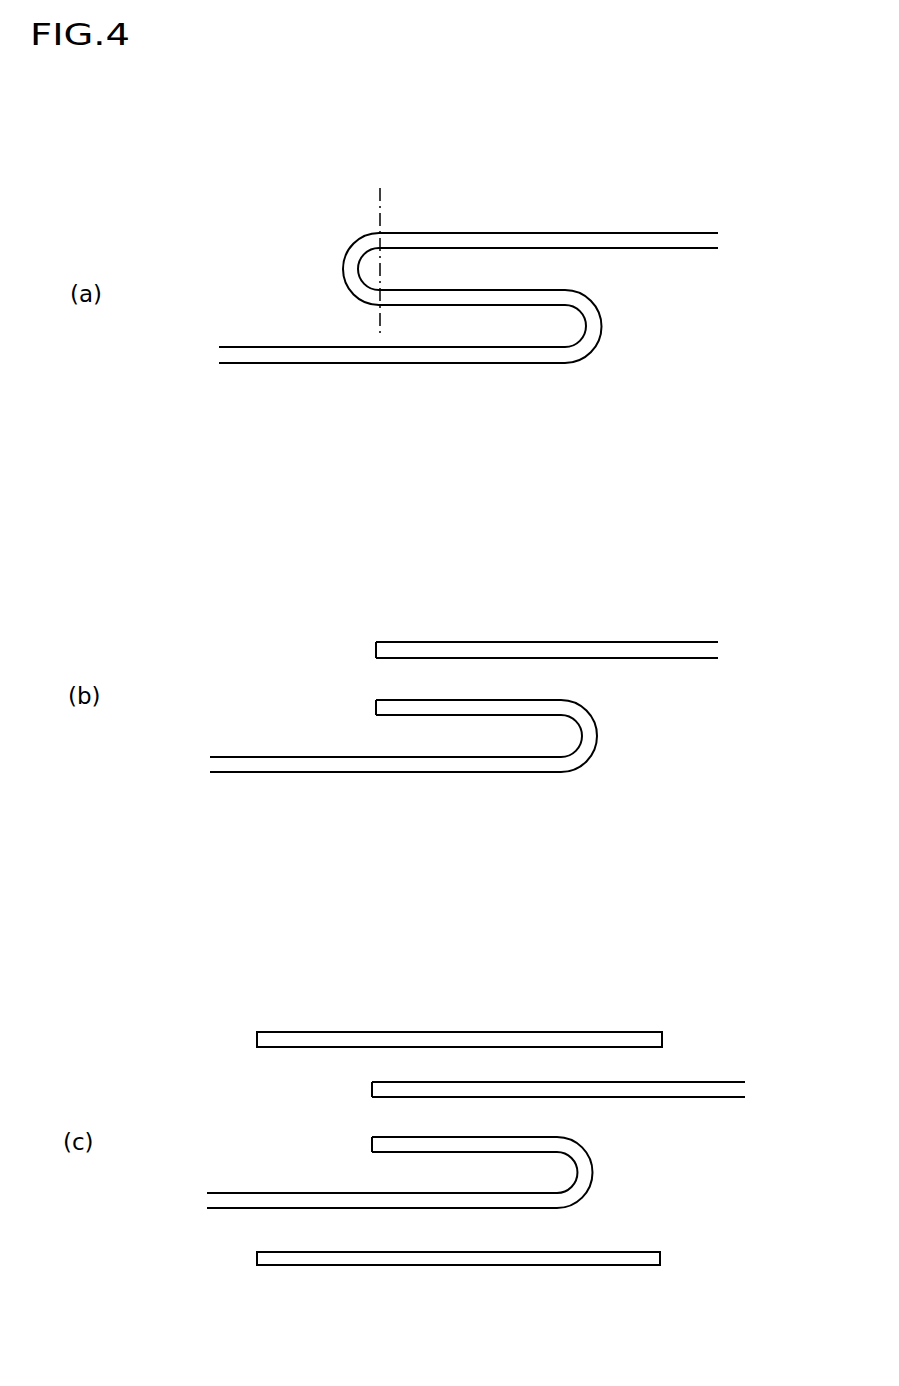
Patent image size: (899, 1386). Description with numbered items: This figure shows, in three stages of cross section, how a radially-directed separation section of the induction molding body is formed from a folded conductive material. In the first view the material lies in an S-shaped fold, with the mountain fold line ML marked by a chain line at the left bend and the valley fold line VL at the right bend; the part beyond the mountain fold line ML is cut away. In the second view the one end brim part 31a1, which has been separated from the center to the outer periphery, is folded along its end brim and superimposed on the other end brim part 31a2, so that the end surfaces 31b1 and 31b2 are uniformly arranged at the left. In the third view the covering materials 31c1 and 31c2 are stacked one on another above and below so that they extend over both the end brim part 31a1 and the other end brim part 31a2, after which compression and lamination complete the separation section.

The mountain fold line ML is at (330, 262).
The valley fold line VL is at (624, 331).
The one end brim part 31a1 is at (467, 707).
The other end brim part 31a2 is at (468, 650).
The end surface 31b1 is at (376, 706).
The end surface 31b2 is at (376, 650).
The covering material 31c1 is at (630, 1252).
The covering material 31c2 is at (632, 1032).